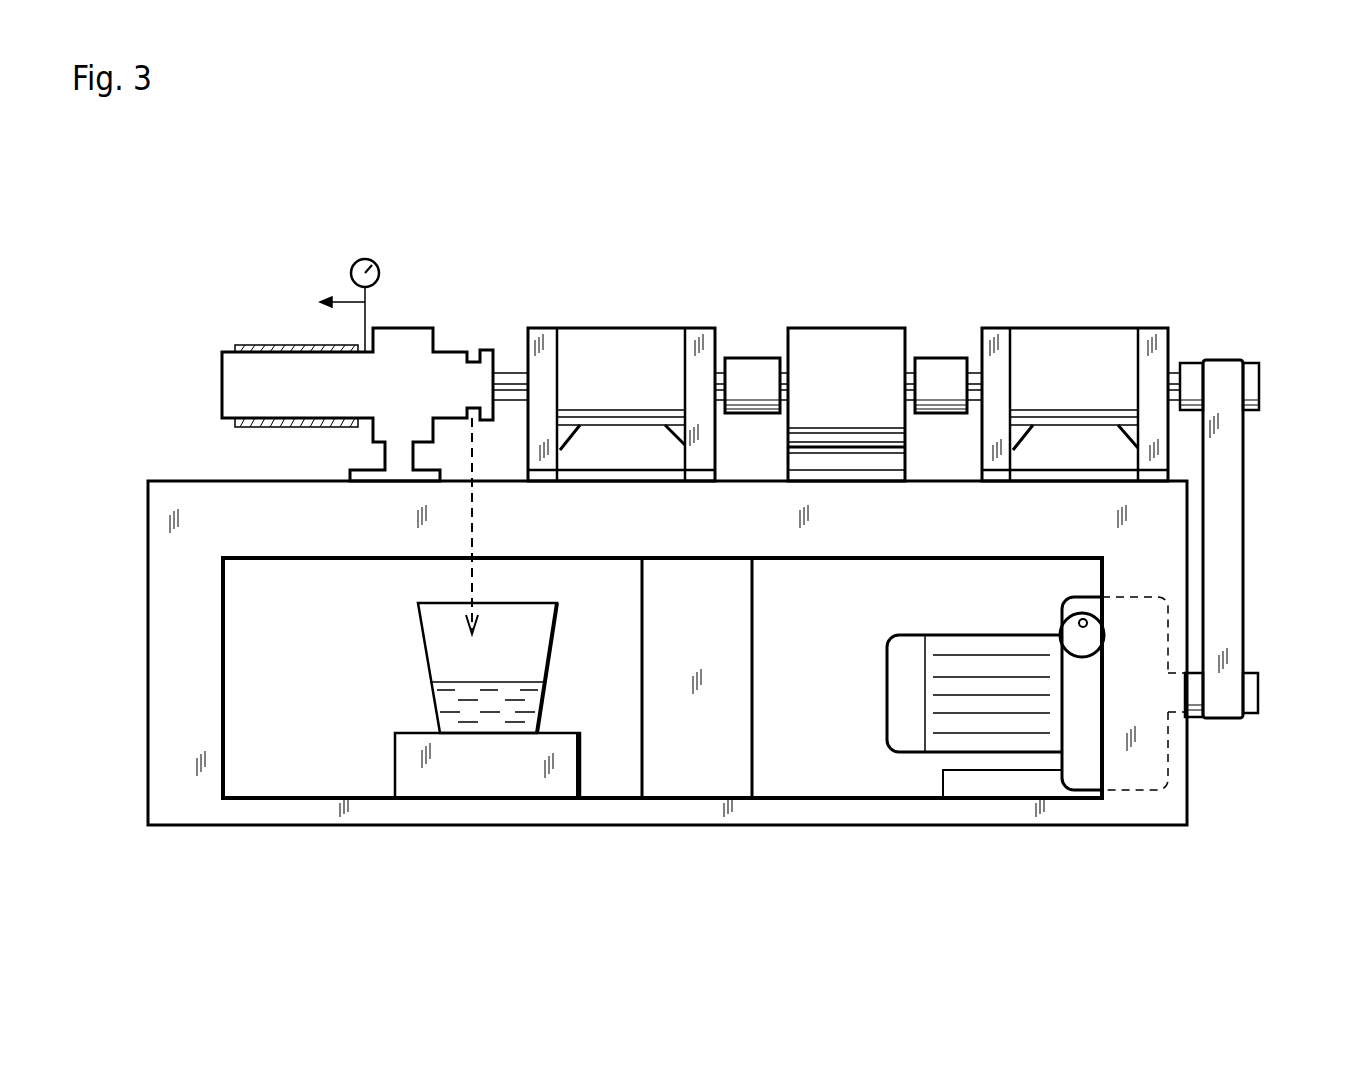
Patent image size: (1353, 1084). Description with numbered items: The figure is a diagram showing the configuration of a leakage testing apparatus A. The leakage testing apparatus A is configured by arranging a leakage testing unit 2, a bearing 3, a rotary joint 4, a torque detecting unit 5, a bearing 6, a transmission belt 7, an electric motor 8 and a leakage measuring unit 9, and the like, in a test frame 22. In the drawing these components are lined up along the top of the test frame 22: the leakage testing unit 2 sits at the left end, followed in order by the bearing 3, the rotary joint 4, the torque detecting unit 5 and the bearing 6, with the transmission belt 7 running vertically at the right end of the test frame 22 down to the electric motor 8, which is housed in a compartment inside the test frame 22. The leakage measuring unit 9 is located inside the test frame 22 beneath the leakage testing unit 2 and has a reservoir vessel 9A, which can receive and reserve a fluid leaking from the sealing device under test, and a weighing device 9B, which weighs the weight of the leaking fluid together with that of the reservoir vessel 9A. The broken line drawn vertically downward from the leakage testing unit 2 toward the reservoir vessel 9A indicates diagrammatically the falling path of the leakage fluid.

The leakage testing apparatus A is at (1088, 245).
The leakage testing unit 2 is at (425, 315).
The bearing 3 is at (647, 337).
The rotary joint 4 is at (748, 362).
The torque detecting unit 5 is at (835, 340).
The bearing 6 is at (1037, 340).
The transmission belt 7 is at (1230, 482).
The electric motor 8 is at (992, 733).
The leakage measuring unit 9 is at (456, 687).
The reservoir vessel 9A is at (555, 628).
The weighing device 9B is at (403, 762).
The test frame 22 is at (207, 488).